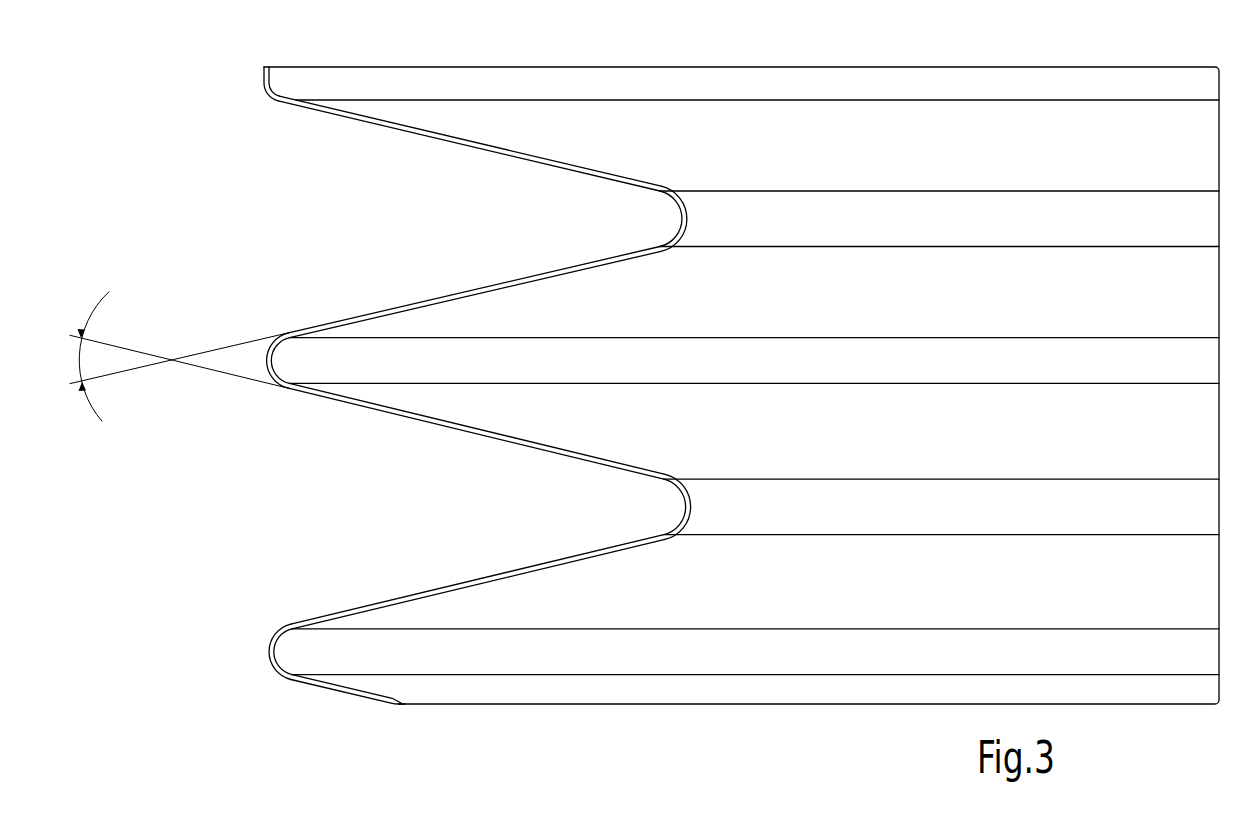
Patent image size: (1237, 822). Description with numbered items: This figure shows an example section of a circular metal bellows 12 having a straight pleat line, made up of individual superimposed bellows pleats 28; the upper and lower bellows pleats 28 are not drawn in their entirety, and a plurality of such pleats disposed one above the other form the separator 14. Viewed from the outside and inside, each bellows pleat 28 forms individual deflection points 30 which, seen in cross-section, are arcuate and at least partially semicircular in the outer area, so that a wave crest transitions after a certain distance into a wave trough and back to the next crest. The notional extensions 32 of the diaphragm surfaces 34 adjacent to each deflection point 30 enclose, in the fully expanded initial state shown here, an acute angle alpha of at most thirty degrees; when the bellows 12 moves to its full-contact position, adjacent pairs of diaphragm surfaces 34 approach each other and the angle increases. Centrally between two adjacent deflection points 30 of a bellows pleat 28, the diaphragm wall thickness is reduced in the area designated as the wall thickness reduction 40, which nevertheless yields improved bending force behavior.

The metal bellows 12 is at (1090, 443).
The separator 14 is at (561, 162).
The bellows pleat 28 is at (388, 127).
The deflection point 30 is at (265, 84).
The notional extension 32 is at (223, 350).
The diaphragm surface 34 is at (638, 181).
The wall thickness reduction 40 is at (460, 144).